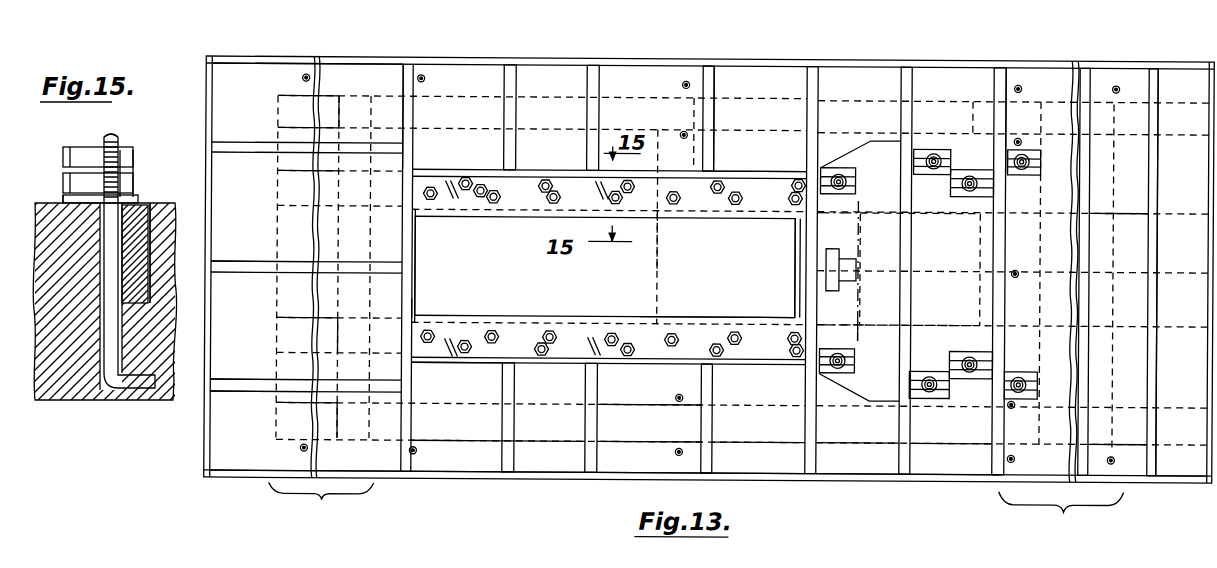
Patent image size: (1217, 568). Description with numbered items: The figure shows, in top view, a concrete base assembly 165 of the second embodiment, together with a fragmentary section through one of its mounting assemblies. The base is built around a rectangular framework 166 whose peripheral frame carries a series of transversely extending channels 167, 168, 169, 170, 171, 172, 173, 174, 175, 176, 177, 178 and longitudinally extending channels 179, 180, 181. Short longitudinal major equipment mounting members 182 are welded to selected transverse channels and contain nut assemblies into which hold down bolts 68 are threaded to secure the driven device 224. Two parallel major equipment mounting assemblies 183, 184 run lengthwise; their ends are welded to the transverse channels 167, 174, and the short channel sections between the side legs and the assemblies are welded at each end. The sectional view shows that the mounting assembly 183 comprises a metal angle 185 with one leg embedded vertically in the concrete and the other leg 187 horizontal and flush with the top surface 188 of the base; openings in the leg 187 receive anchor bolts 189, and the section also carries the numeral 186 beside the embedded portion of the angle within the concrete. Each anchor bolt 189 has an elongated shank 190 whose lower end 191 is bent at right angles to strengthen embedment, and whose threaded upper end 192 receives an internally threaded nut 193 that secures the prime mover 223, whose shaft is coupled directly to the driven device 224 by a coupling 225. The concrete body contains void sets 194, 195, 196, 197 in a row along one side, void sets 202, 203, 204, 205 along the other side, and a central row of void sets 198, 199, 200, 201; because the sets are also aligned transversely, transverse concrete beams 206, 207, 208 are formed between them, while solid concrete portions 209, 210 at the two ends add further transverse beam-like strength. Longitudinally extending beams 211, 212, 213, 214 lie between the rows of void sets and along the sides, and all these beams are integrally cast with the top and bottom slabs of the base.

In FIG. 13, the hold down bolt 68 is at (1025, 160).
In FIG. 13, the base assembly 165 is at (473, 486).
In FIG. 13, the rectangular framework 166 is at (797, 484).
In FIG. 13, the transversely extending channel 167 is at (407, 380).
In FIG. 13, the transversely extending channel 168 is at (506, 462).
In FIG. 13, the transversely extending channel 169 is at (596, 452).
In FIG. 13, the transversely extending channel 170 is at (708, 455).
In FIG. 13, the transversely extending channel 171 is at (510, 75).
In FIG. 13, the transversely extending channel 172 is at (592, 75).
In FIG. 13, the transversely extending channel 173 is at (708, 75).
In FIG. 13, the transversely extending channel 174 is at (812, 75).
In FIG. 13, the transversely extending channel 175 is at (904, 478).
In FIG. 13, the transversely extending channel 176 is at (1000, 75).
In FIG. 13, the transversely extending channel 177 is at (1085, 75).
In FIG. 13, the transversely extending channel 178 is at (1154, 75).
In FIG. 13, the longitudinally extending channel 179 is at (244, 147).
In FIG. 13, the longitudinally extending channel 180 is at (226, 264).
In FIG. 13, the longitudinally extending channel 181 is at (246, 382).
In FIG. 13, the major equipment mounting member 182 is at (848, 178).
In FIG. 15, the major equipment mounting assembly 183 is at (58, 178).
In FIG. 13, the major equipment mounting assembly 183 is at (478, 207).
In FIG. 13, the major equipment mounting assembly 184 is at (673, 330).
In FIG. 15, the metal angle 185 is at (142, 198).
In FIG. 13, the metal angle 185 is at (508, 205).
In FIG. 15, the sleeve 186 is at (148, 268).
In FIG. 13, the sleeve 186 is at (575, 203).
In FIG. 15, the horizontal leg 187 is at (66, 202).
In FIG. 13, the horizontal leg 187 is at (676, 206).
In FIG. 15, the top surface 188 is at (162, 203).
In FIG. 13, the top surface 188 is at (785, 243).
In FIG. 15, the anchor bolt 189 is at (118, 137).
In FIG. 13, the anchor bolt 189 is at (428, 203).
In FIG. 15, the shank 190 is at (185, 312).
In FIG. 15, the lower end 191 is at (125, 388).
In FIG. 15, the upper end 192 is at (100, 140).
In FIG. 15, the nut 193 is at (135, 155).
In FIG. 13, the void set 194 is at (272, 414).
In FIG. 13, the void set 195 is at (423, 447).
In FIG. 13, the void set 196 is at (834, 450).
In FIG. 13, the void set 197 is at (1097, 436).
In FIG. 13, the void set 198 is at (275, 302).
In FIG. 13, the void set 199 is at (655, 258).
In FIG. 13, the void set 200 is at (922, 215).
In FIG. 13, the void set 201 is at (1098, 242).
In FIG. 13, the void set 202 is at (296, 114).
In FIG. 13, the void set 203 is at (470, 112).
In FIG. 13, the void set 204 is at (773, 110).
In FIG. 13, the void set 205 is at (1033, 110).
In FIG. 13, the transversely extending concrete beam 206 is at (350, 410).
In FIG. 13, the transversely extending beam 207 is at (595, 408).
In FIG. 13, the transversely extending beam 208 is at (971, 446).
In FIG. 13, the solid concrete portion 209 is at (211, 400).
In FIG. 13, the solid concrete portion 210 is at (1168, 468).
In FIG. 13, the longitudinally extending beam 211 is at (244, 82).
In FIG. 13, the longitudinally extending beam 212 is at (298, 196).
In FIG. 13, the longitudinally extending beam 213 is at (292, 340).
In FIG. 13, the longitudinally extending beam 214 is at (295, 462).
In FIG. 13, the prime mover 223 is at (418, 305).
In FIG. 13, the driven device 224 is at (858, 320).
In FIG. 13, the coupling 225 is at (843, 247).